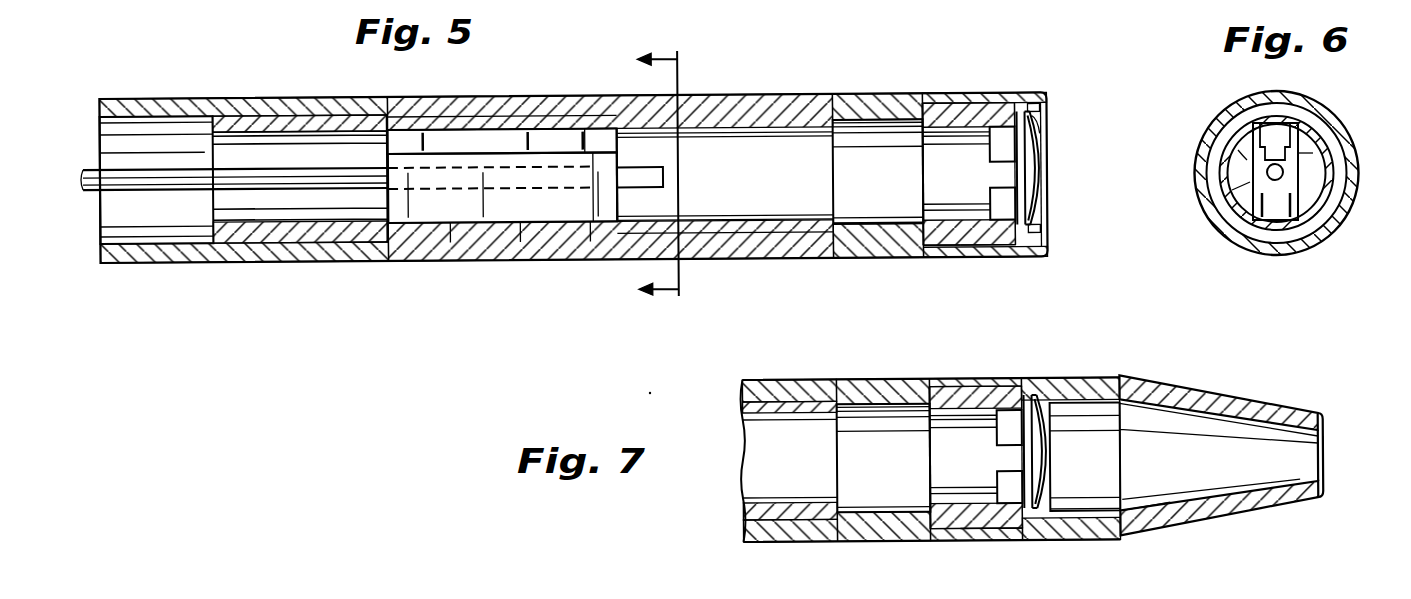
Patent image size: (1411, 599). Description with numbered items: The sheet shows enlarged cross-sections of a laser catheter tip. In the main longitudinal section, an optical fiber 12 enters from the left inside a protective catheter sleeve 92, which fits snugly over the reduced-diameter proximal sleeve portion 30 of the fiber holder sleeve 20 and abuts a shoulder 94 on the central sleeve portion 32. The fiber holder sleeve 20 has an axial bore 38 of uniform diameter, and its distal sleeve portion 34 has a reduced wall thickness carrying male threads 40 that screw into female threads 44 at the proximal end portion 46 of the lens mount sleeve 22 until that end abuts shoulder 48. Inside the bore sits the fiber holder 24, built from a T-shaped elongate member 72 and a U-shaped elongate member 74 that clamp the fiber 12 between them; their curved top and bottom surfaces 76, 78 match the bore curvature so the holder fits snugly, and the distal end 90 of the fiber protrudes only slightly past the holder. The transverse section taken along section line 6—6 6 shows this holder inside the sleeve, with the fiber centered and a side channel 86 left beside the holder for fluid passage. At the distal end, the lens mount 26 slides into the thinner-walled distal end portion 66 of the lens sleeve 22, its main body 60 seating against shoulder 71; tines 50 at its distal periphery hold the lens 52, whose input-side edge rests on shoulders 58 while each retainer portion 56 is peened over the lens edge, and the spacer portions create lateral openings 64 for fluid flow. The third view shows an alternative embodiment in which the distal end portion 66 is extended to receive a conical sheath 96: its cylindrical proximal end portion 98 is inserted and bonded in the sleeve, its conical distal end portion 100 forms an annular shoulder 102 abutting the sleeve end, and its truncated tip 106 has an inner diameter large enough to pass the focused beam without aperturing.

In FIG. 5, the section line 6— 6 is at (676, 175).
In FIG. 5, the optical fiber 12 is at (178, 186).
In FIG. 6, the optical fiber 12 is at (1298, 168).
In FIG. 5, the fiber holder sleeve 20 is at (525, 103).
In FIG. 6, the fiber holder sleeve 20 is at (1283, 237).
In FIG. 5, the lens mount sleeve 22 is at (822, 100).
In FIG. 6, the lens mount sleeve 22 is at (1337, 227).
In FIG. 7, the lens mount sleeve 22 is at (880, 380).
In FIG. 5, the fiber holder 24 is at (590, 243).
In FIG. 6, the fiber holder 24 is at (1245, 160).
In FIG. 5, the lens mount 26 is at (990, 107).
In FIG. 7, the lens mount 26 is at (985, 388).
In FIG. 5, the proximal sleeve portion 30 is at (290, 103).
In FIG. 5, the central sleeve portion 32 is at (520, 250).
In FIG. 5, the distal sleeve portion 34 is at (822, 245).
In FIG. 7, the distal sleeve portion 34 is at (808, 520).
In FIG. 5, the axial bore 38 is at (836, 128).
In FIG. 7, the axial bore 38 is at (840, 412).
In FIG. 5, the threads 40 is at (778, 240).
In FIG. 7, the threads 40 is at (762, 395).
In FIG. 5, the female threads 44 is at (760, 245).
In FIG. 5, the proximal end portion 46 is at (735, 100).
In FIG. 5, the shoulder 48 is at (578, 100).
In FIG. 5, the tines 50 is at (1030, 100).
In FIG. 7, the tines 50 is at (1027, 530).
In FIG. 5, the lens 52 is at (1047, 180).
In FIG. 7, the lens 52 is at (1052, 440).
In FIG. 5, the retainer portion 56 is at (1045, 115).
In FIG. 5, the shoulders 58 is at (1047, 135).
In FIG. 5, the main body 60 is at (985, 262).
In FIG. 7, the main body 60 is at (975, 530).
In FIG. 5, the lateral openings 64 is at (992, 162).
In FIG. 7, the lateral openings 64 is at (995, 445).
In FIG. 5, the distal end portion 66 is at (918, 108).
In FIG. 7, the distal end portion 66 is at (1080, 382).
In FIG. 5, the shoulder 71 is at (930, 258).
In FIG. 5, the elongate member 72 is at (412, 130).
In FIG. 6, the elongate member 72 is at (1298, 140).
In FIG. 5, the elongate member 74 is at (432, 212).
In FIG. 6, the elongate member 74 is at (1313, 200).
In FIG. 5, the top surface 76 is at (490, 119).
In FIG. 6, the top surface 76 is at (1280, 122).
In FIG. 5, the bottom surface 78 is at (450, 248).
In FIG. 6, the bottom surface 78 is at (1238, 247).
In FIG. 6, the side channel 86 is at (1313, 153).
In FIG. 5, the distal end 90 is at (665, 178).
In FIG. 5, the catheter sleeve 92 is at (165, 100).
In FIG. 5, the shoulder 94 is at (440, 100).
In FIG. 7, the conical sheath 96 is at (1235, 390).
In FIG. 7, the proximal end portion 98 is at (1075, 512).
In FIG. 7, the distal end portion 100 is at (1307, 417).
In FIG. 7, the annular shoulder 102 is at (1108, 538).
In FIG. 7, the truncated tip 106 is at (1325, 490).